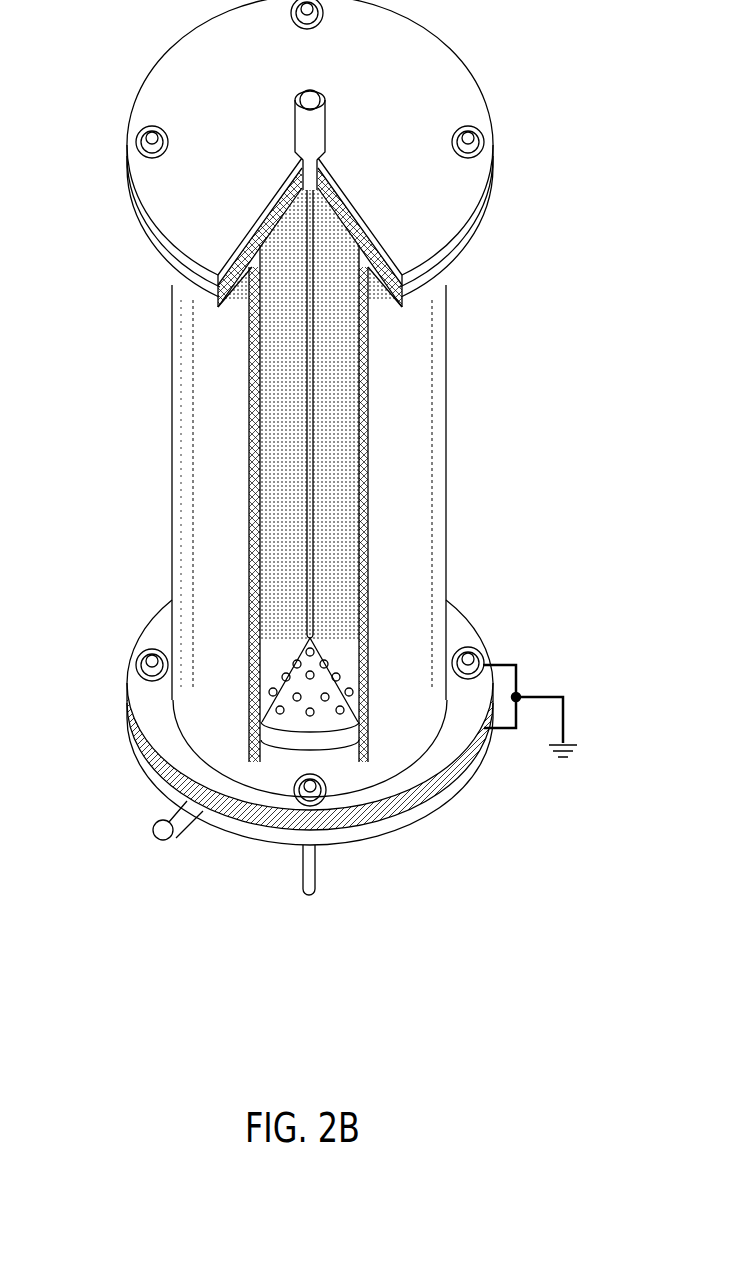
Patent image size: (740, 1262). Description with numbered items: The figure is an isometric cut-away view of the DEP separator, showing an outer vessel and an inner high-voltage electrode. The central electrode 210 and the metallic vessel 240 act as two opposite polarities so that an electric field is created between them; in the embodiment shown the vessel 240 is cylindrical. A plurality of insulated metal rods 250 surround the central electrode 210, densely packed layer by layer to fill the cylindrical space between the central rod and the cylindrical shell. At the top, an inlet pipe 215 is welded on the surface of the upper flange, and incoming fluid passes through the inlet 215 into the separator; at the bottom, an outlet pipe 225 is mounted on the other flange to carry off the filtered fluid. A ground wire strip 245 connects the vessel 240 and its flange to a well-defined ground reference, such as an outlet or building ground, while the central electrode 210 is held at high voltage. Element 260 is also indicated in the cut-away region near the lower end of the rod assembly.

The inlet pipe 215 is at (300, 124).
The metallic vessel 240 is at (203, 387).
The insulated metal rods 250 is at (287, 487).
The electrode 210 is at (305, 608).
The pellet cone 260 is at (295, 723).
The outlet pipe 225 is at (172, 811).
The ground wire strip 245 is at (523, 670).